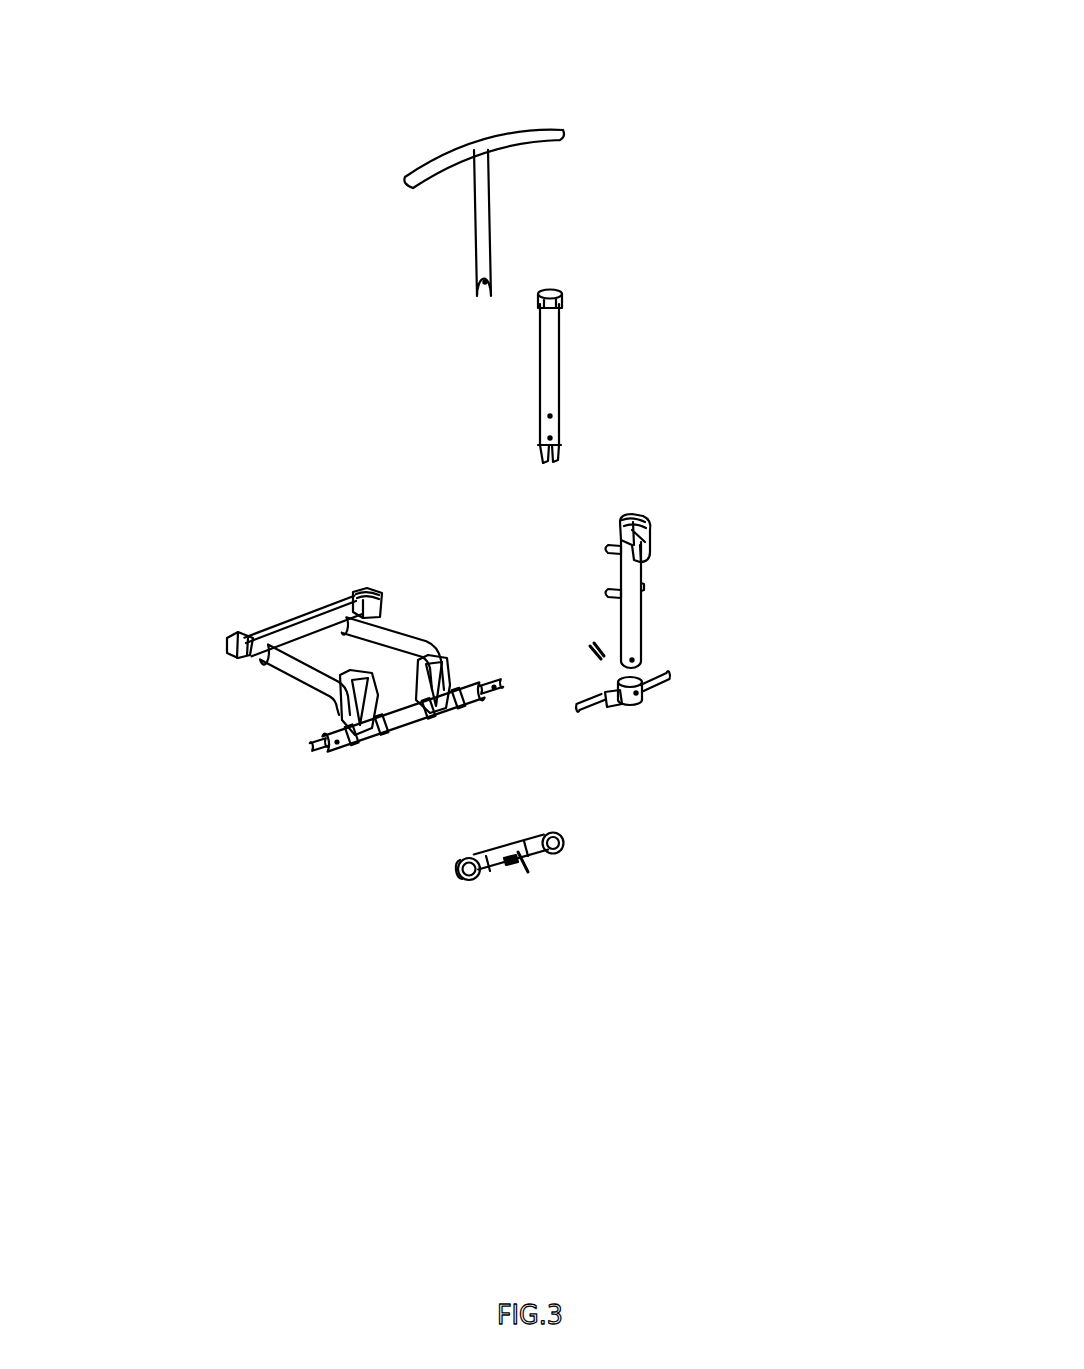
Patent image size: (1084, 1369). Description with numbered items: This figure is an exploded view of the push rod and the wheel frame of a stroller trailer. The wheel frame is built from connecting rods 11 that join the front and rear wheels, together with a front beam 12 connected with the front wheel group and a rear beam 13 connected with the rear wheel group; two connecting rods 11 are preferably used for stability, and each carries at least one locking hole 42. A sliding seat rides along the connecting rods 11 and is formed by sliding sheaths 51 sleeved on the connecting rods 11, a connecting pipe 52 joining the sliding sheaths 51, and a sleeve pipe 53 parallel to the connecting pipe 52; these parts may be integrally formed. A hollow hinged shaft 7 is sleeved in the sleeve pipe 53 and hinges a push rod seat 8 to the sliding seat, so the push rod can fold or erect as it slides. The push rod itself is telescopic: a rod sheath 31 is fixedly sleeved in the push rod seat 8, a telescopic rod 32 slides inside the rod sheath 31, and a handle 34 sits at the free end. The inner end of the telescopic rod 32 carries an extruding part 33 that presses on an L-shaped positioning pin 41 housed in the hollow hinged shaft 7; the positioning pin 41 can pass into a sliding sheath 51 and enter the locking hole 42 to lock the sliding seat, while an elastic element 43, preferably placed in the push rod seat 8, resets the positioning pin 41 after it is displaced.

The hollow hinged shaft 7 is at (660, 680).
The push rod seat 8 is at (645, 690).
The connecting rod 11 is at (372, 586).
The front beam 12 is at (305, 618).
The rear beam 13 is at (403, 717).
The rod sheath 31 is at (628, 622).
The telescopic rod 32 is at (620, 219).
The extruding part 33 is at (560, 450).
The handle 34 is at (473, 148).
The positioning pin 41 is at (540, 863).
The locking hole 42 is at (395, 642).
The elastic element 43 is at (517, 866).
The sliding sheath 51 is at (545, 838).
The connecting pipe 52 is at (512, 855).
The sleeve pipe 53 is at (551, 856).